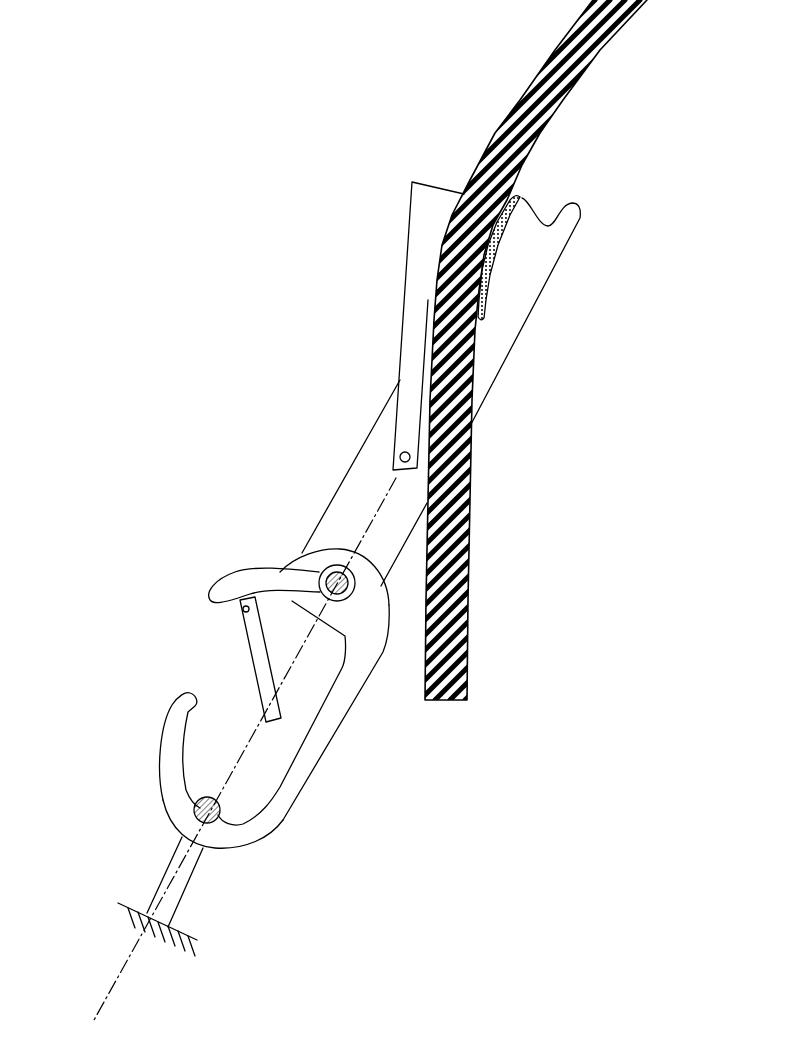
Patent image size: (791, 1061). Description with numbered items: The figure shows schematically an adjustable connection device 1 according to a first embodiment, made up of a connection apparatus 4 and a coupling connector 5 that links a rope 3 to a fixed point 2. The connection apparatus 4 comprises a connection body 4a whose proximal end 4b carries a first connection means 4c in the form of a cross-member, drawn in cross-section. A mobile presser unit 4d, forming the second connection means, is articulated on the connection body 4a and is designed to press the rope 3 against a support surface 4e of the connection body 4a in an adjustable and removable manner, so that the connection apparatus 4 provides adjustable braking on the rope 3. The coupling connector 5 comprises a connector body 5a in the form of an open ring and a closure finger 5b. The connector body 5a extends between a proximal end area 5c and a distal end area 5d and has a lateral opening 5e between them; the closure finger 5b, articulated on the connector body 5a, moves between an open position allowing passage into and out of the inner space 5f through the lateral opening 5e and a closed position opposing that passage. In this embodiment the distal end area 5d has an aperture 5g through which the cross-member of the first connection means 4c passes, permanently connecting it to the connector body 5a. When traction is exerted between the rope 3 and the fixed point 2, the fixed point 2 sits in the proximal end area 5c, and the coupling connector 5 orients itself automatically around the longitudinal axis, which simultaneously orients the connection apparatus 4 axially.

The adjustable connection device 1 is at (296, 307).
The fixed point 2 is at (192, 810).
The rope 3 is at (637, 0).
The connection apparatus 4 is at (574, 313).
The connection body 4a is at (492, 372).
The proximal end 4b is at (325, 545).
The first connection means 4c is at (252, 570).
The mobile presser unit 4d is at (398, 232).
The support surface 4e is at (580, 208).
The coupling connector 5 is at (370, 738).
The connector body 5a is at (313, 748).
The closure finger 5b is at (251, 641).
The proximal end area 5c is at (225, 833).
The distal end area 5d is at (337, 565).
The lateral opening 5e is at (181, 678).
The inner space 5f is at (263, 767).
The aperture 5g is at (244, 606).